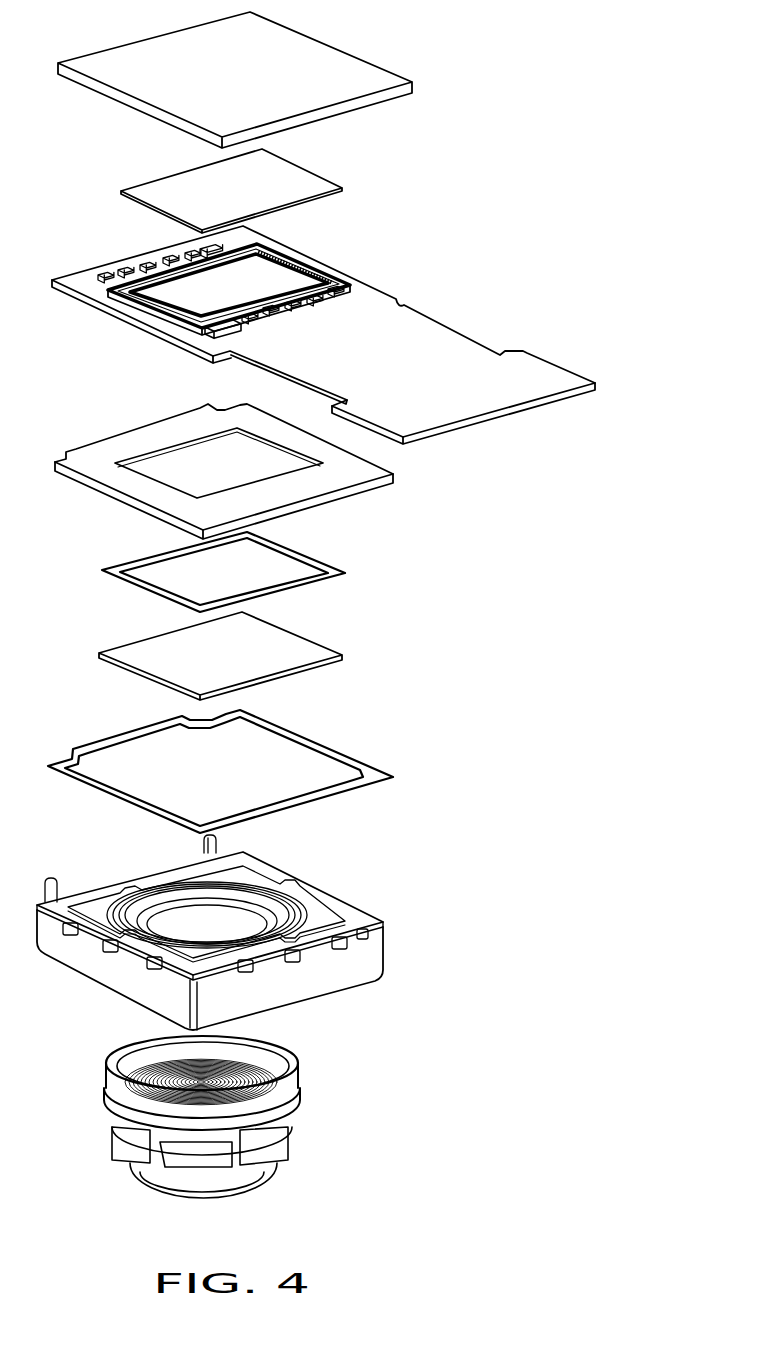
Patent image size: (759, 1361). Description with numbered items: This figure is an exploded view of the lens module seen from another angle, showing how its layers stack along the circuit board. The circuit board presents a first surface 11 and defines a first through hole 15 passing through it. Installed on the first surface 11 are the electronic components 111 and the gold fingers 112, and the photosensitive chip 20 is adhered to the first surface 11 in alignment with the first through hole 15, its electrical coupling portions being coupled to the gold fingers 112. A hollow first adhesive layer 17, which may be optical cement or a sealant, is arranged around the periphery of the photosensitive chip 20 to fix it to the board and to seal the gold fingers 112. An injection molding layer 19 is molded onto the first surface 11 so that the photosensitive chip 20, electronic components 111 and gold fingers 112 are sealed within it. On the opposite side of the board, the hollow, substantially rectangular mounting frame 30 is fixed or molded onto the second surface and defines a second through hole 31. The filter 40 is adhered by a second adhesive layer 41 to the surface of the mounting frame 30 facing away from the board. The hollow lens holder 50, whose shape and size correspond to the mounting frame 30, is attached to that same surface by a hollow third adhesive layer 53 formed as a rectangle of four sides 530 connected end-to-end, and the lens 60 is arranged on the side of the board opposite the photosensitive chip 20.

The first surface 11 is at (405, 303).
The electronic components 111 is at (338, 284).
The gold fingers 112 is at (290, 268).
The first through hole 15 is at (187, 288).
The first adhesive layer 17 is at (148, 305).
The injection molding layer 19 is at (334, 58).
The photosensitive chip 20 is at (303, 173).
The mounting frame 30 is at (370, 468).
The second through hole 31 is at (191, 454).
The filter 40 is at (313, 652).
The second adhesive layer 41 is at (112, 568).
The lens holder 50 is at (363, 955).
The third adhesive layer 53 is at (380, 777).
The sides 530 is at (318, 748).
The lens 60 is at (288, 1120).